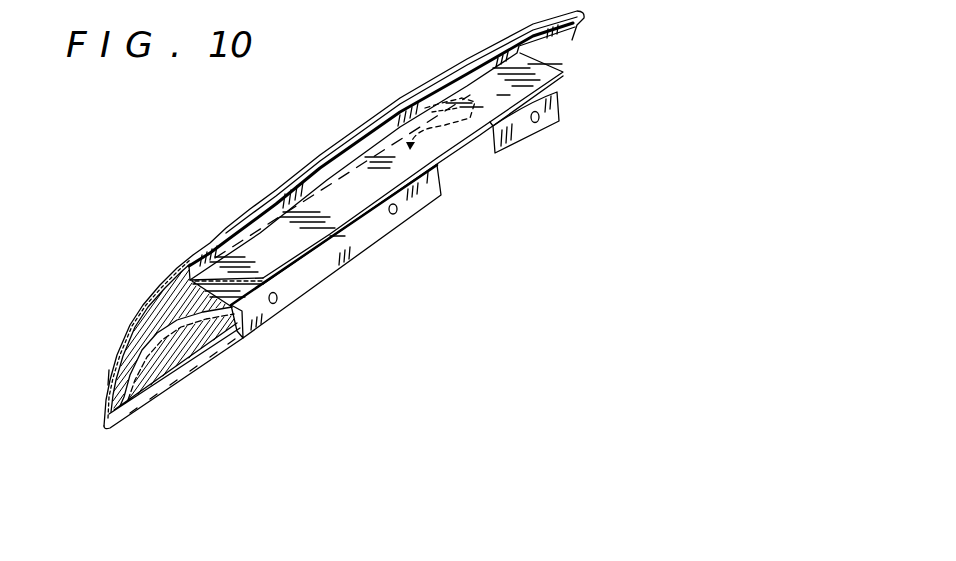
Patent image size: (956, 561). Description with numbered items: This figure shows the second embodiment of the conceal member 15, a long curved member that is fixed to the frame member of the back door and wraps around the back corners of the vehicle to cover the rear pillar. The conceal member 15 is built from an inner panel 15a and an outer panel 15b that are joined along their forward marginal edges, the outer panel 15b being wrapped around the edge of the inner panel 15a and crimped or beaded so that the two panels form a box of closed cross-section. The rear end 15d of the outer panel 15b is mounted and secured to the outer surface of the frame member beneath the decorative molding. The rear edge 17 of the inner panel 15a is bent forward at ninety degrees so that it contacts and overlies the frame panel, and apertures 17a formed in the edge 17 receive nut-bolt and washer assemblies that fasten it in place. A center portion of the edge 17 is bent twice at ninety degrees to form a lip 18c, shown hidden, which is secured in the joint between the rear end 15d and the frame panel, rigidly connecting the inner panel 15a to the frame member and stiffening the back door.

The conceal member 15 is at (115, 299).
The inner panel 15a is at (139, 367).
The outer panel 15b is at (105, 382).
The rear end of outer panel 15d is at (423, 178).
The rear edge of inner panel 17 is at (367, 236).
The apertures 17a is at (277, 306).
The lip 18c is at (433, 110).